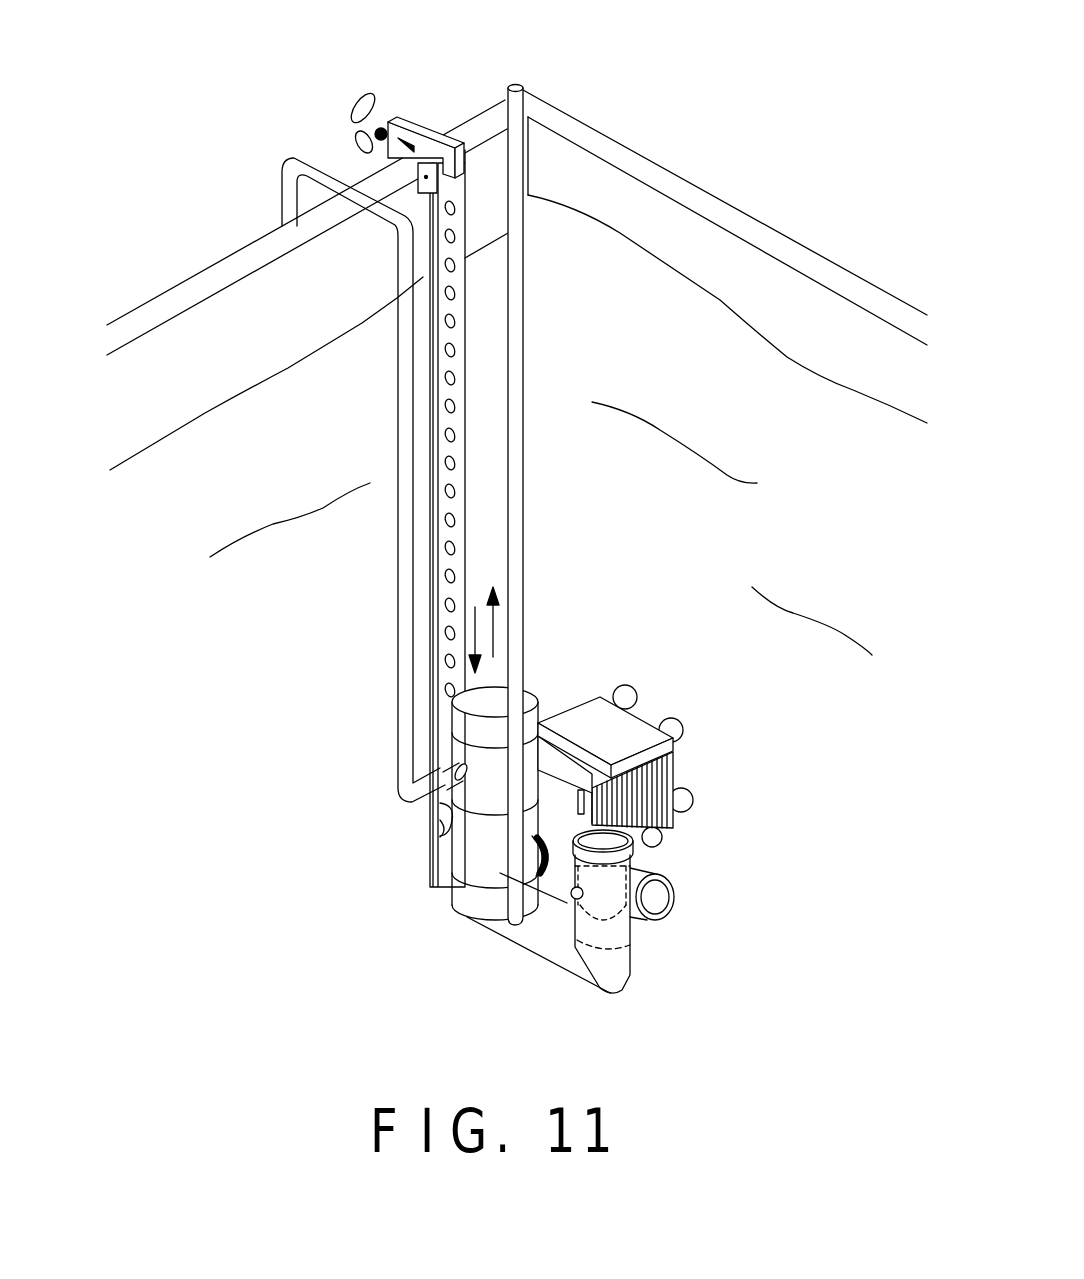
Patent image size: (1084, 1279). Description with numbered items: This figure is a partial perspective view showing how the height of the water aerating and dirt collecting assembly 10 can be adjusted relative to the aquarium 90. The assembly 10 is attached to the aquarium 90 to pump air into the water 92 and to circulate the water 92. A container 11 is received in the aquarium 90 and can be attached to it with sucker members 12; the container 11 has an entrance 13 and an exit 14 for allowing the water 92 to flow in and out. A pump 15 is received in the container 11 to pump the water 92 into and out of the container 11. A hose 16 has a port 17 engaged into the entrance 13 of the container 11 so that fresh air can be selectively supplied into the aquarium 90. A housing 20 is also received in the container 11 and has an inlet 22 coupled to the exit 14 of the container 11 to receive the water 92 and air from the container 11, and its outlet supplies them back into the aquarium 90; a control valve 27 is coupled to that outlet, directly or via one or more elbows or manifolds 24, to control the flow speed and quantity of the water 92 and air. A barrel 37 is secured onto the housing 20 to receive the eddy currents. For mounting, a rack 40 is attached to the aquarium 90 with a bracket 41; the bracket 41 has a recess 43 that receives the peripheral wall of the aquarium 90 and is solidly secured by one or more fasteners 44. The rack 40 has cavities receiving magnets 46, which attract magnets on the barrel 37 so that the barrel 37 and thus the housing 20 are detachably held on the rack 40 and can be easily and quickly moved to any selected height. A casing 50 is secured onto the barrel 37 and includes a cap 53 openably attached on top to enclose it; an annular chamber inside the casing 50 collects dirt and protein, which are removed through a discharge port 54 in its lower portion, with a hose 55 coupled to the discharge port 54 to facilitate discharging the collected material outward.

The water aerating and dirt collecting assembly 10 is at (650, 834).
The container 11 is at (635, 724).
The sucker members 12 is at (684, 803).
The entrance 13 is at (652, 913).
The exit 14 is at (560, 862).
The pump 15 is at (605, 712).
The hose 16 is at (507, 81).
The port 17 is at (610, 927).
The housing 20 is at (458, 897).
The inlet 22 is at (545, 893).
The elbows or manifolds 24 is at (574, 970).
The control valve 27 is at (607, 865).
The barrel 37 is at (462, 838).
The rack 40 is at (428, 390).
The bracket 41 is at (423, 142).
The recess 43 is at (372, 166).
The fasteners 44 is at (357, 123).
The magnets 46 is at (453, 375).
The casing 50 is at (413, 806).
The cap 53 is at (462, 715).
The discharge port 54 is at (427, 812).
The hose 55 is at (282, 180).
The aquarium 90 is at (876, 298).
The water 92 is at (720, 330).